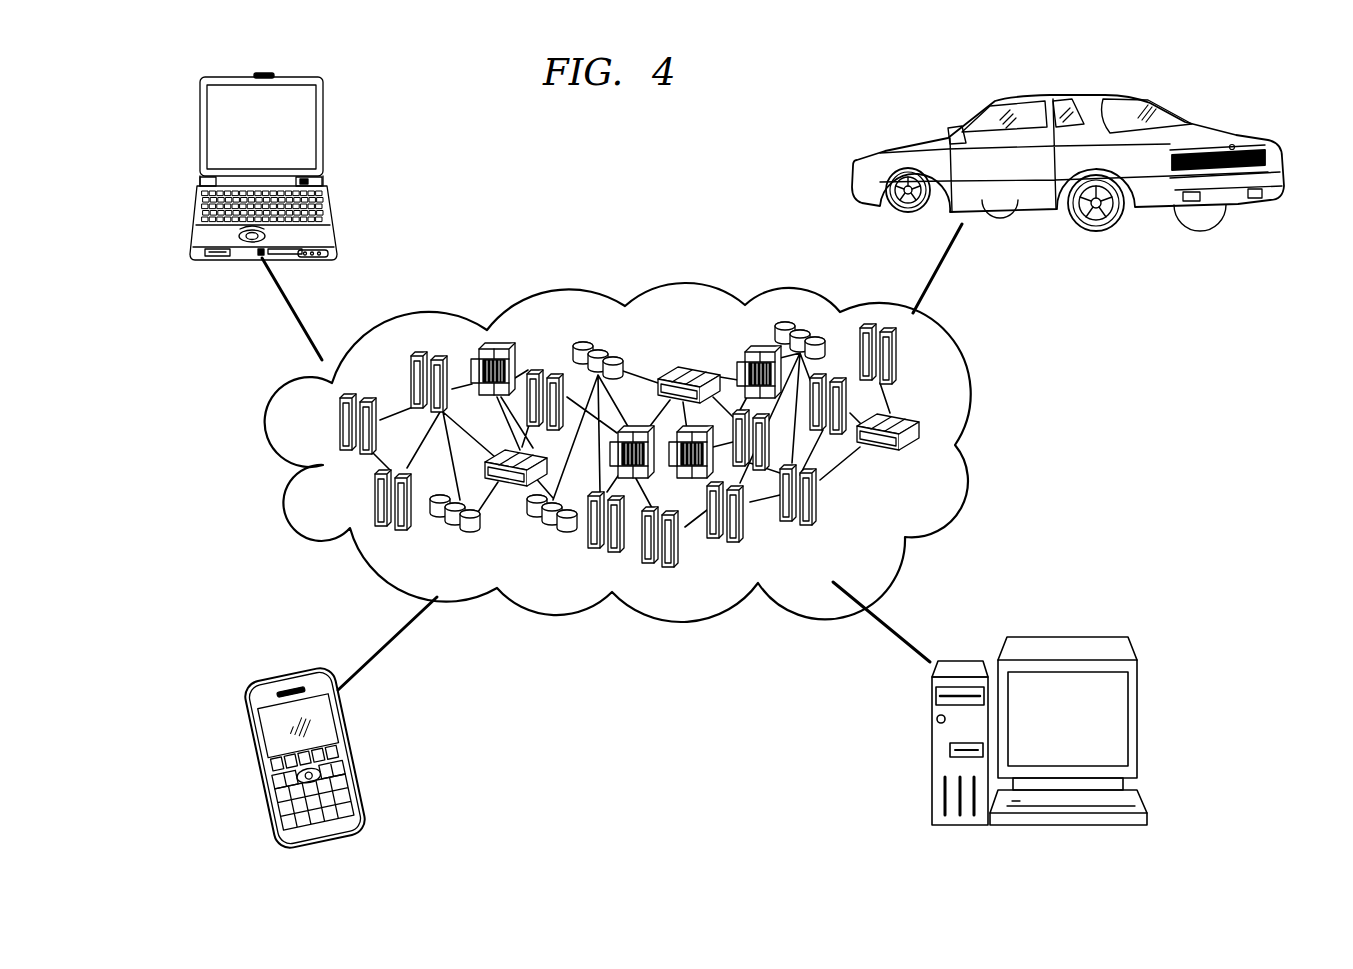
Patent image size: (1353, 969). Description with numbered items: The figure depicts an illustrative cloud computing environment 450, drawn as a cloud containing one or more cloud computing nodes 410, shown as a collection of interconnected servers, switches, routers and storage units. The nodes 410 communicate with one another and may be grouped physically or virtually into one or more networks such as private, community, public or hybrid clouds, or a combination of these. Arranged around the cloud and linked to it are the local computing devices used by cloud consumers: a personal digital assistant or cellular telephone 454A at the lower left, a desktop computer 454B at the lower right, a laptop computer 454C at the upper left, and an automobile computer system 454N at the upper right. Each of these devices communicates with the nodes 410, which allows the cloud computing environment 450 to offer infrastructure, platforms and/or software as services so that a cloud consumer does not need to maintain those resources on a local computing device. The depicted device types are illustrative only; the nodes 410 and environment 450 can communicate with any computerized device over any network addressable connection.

The cloud computing nodes 410 is at (922, 455).
The cloud computing environment 450 is at (972, 373).
The personal digital assistant or cellular telephone 454A is at (243, 745).
The desktop computer 454B is at (1072, 636).
The laptop computer 454C is at (200, 122).
The automobile computer system 454N is at (1240, 127).